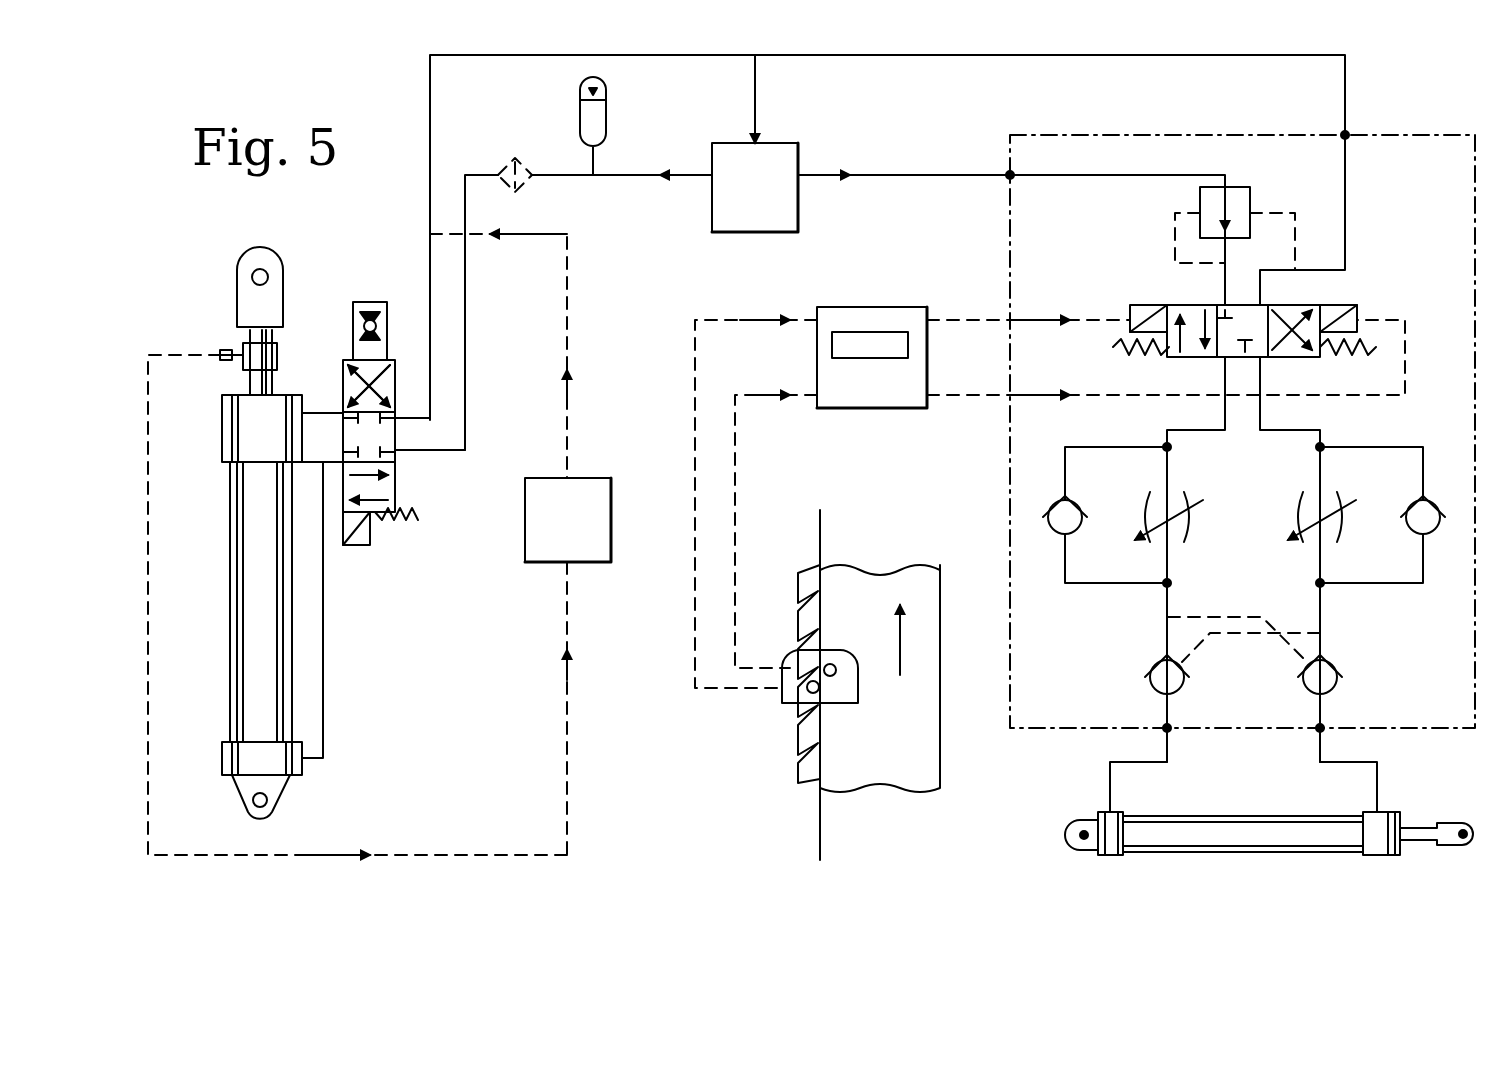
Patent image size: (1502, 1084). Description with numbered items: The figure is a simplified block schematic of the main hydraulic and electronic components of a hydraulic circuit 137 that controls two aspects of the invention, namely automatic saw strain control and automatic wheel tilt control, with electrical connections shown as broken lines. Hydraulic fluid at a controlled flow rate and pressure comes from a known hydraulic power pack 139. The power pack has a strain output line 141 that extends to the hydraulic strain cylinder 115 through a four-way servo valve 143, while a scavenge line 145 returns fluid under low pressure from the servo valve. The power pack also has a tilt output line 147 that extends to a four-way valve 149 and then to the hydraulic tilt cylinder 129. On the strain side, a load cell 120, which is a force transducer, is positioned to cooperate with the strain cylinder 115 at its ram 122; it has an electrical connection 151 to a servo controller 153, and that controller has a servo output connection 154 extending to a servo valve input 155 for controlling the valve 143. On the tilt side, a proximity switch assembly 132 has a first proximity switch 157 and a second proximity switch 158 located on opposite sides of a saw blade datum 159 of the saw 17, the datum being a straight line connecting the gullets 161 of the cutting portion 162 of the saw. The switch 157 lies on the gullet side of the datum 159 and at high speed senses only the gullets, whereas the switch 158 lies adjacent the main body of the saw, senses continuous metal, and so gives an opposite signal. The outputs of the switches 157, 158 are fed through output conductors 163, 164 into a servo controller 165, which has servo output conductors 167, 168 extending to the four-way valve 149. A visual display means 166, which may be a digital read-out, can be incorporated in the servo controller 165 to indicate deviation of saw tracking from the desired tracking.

The saw 17 is at (942, 735).
The hydraulic strain cylinder 115 is at (230, 560).
The load cell 120 is at (318, 333).
The ram 122 is at (243, 372).
The hydraulic tilt cylinder 129 is at (1272, 815).
The proximity switch assembly 132 is at (795, 712).
The hydraulic circuit 137 is at (1175, 38).
The hydraulic power pack 139 is at (800, 187).
The strain output line 141 is at (630, 178).
The 4-way servo valve 143 is at (397, 480).
The scavenge line 145 is at (548, 52).
The tilt output line 147 is at (965, 170).
The 4-way valve 149 is at (1295, 305).
The electrical connection 151 is at (400, 855).
The servo controller 153 is at (628, 455).
The servo output connection 154 is at (567, 352).
The servo valve input 155 is at (355, 303).
The first proximity switch 157 is at (808, 690).
The second proximity switch 158 is at (862, 672).
The saw blade datum 159 is at (822, 542).
The gullets 161 is at (822, 642).
The cutting portion 162 is at (790, 622).
The output conductor 163 is at (695, 498).
The output conductor 164 is at (735, 507).
The servo controller 165 is at (917, 410).
The visual display means 166 is at (876, 332).
The servo output conductor 167 is at (962, 318).
The servo output conductor 168 is at (964, 398).